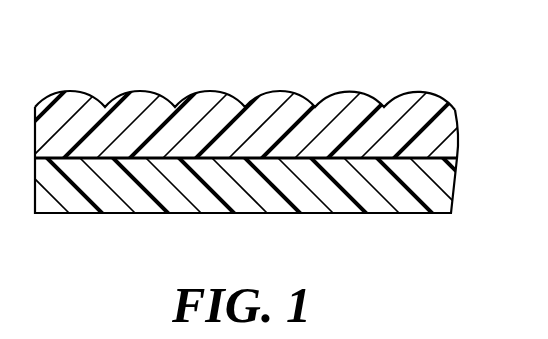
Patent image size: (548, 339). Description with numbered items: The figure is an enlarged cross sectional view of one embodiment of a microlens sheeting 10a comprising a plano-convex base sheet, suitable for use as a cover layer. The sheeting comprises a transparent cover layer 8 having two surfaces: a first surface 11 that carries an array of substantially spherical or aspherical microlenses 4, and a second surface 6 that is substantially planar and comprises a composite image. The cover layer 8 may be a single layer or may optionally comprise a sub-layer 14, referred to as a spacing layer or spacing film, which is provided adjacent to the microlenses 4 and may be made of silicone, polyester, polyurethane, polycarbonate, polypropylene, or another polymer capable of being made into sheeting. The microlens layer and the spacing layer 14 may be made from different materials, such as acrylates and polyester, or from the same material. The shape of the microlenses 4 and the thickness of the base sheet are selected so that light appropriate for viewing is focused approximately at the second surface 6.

The microlens sheeting 10a is at (344, 54).
The transparent cover layer 8 is at (476, 91).
The first surface 11 is at (47, 97).
The microlenses 4 is at (186, 96).
The spacing layer 14 is at (152, 203).
The second surface 6 is at (417, 213).